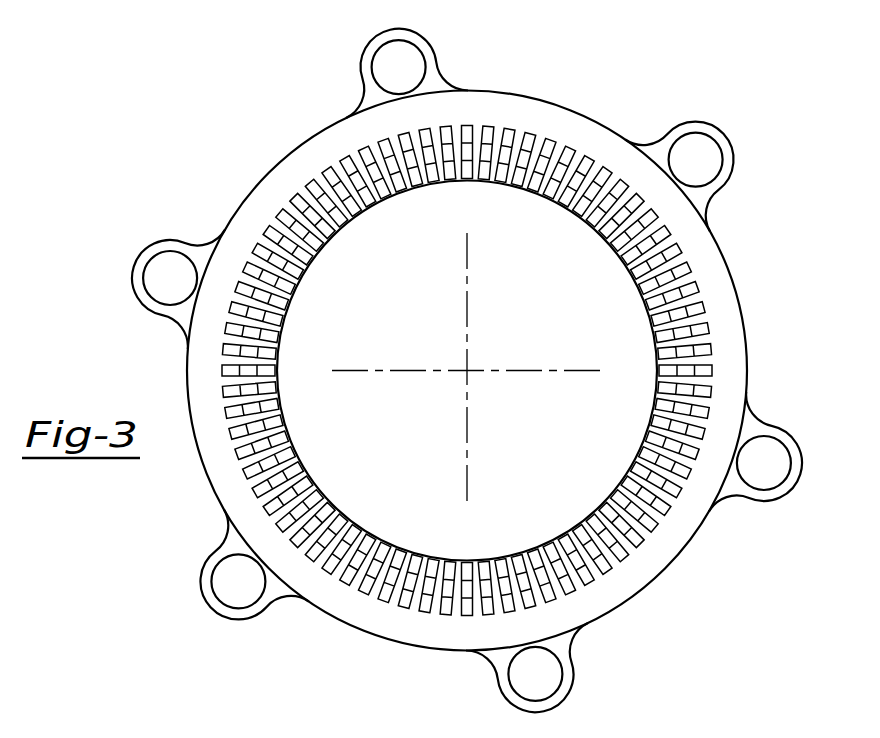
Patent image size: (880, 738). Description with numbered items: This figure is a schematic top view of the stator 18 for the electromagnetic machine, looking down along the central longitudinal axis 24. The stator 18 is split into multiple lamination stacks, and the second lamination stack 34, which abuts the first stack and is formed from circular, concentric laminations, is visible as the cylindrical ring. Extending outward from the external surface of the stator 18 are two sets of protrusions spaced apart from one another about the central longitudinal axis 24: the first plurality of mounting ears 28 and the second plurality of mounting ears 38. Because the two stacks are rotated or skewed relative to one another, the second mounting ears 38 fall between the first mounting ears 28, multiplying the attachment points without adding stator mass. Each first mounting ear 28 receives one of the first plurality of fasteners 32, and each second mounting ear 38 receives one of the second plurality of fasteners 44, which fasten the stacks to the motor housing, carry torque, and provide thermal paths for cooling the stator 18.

The stator 18 is at (653, 45).
The central longitudinal axis 24 is at (467, 370).
The first plurality of mounting ears 28 is at (437, 42).
The first plurality of fasteners 32 is at (393, 67).
The second lamination stack 34 is at (533, 113).
The second plurality of mounting ears 38 is at (722, 128).
The second plurality of fasteners 44 is at (710, 160).